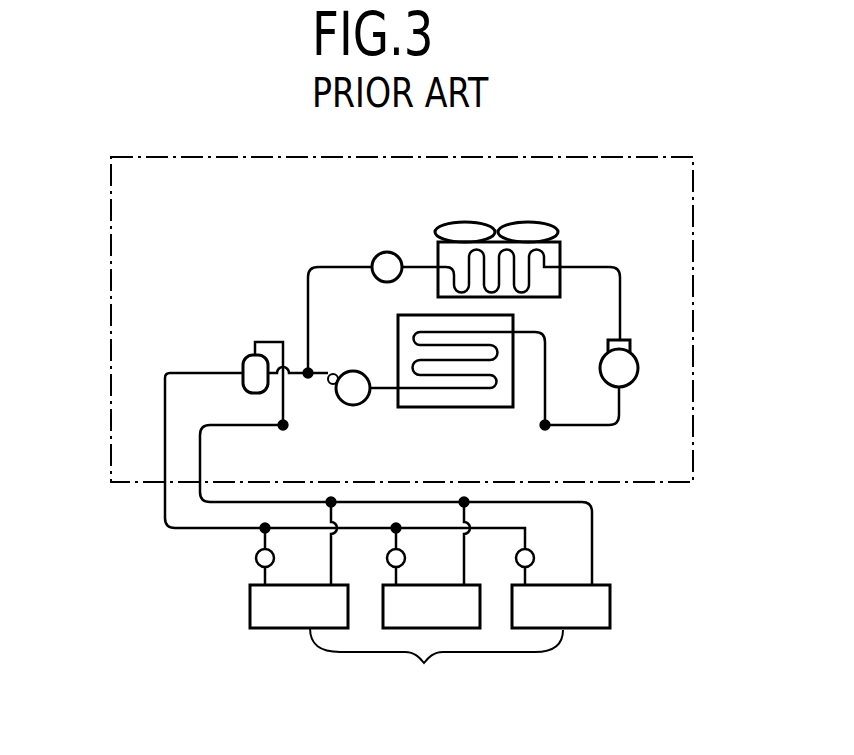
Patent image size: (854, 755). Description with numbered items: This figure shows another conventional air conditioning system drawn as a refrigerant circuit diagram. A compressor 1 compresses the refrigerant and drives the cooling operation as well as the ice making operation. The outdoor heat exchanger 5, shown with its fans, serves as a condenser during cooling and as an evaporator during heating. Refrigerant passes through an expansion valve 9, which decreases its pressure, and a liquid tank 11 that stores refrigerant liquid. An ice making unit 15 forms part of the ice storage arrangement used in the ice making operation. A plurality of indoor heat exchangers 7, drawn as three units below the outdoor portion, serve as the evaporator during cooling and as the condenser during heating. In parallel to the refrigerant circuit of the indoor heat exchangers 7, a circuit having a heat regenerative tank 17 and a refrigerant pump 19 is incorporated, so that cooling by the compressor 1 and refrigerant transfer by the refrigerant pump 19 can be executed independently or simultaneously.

The compressor 1 is at (635, 350).
The outdoor heat exchanger 5 is at (562, 258).
The indoor heat exchangers 7 is at (405, 567).
The expansion valve 9 is at (378, 255).
The liquid tank 11 is at (243, 366).
The ice making unit 15 is at (428, 324).
The heat regenerative tank 17 is at (513, 327).
The refrigerant pump 19 is at (342, 375).